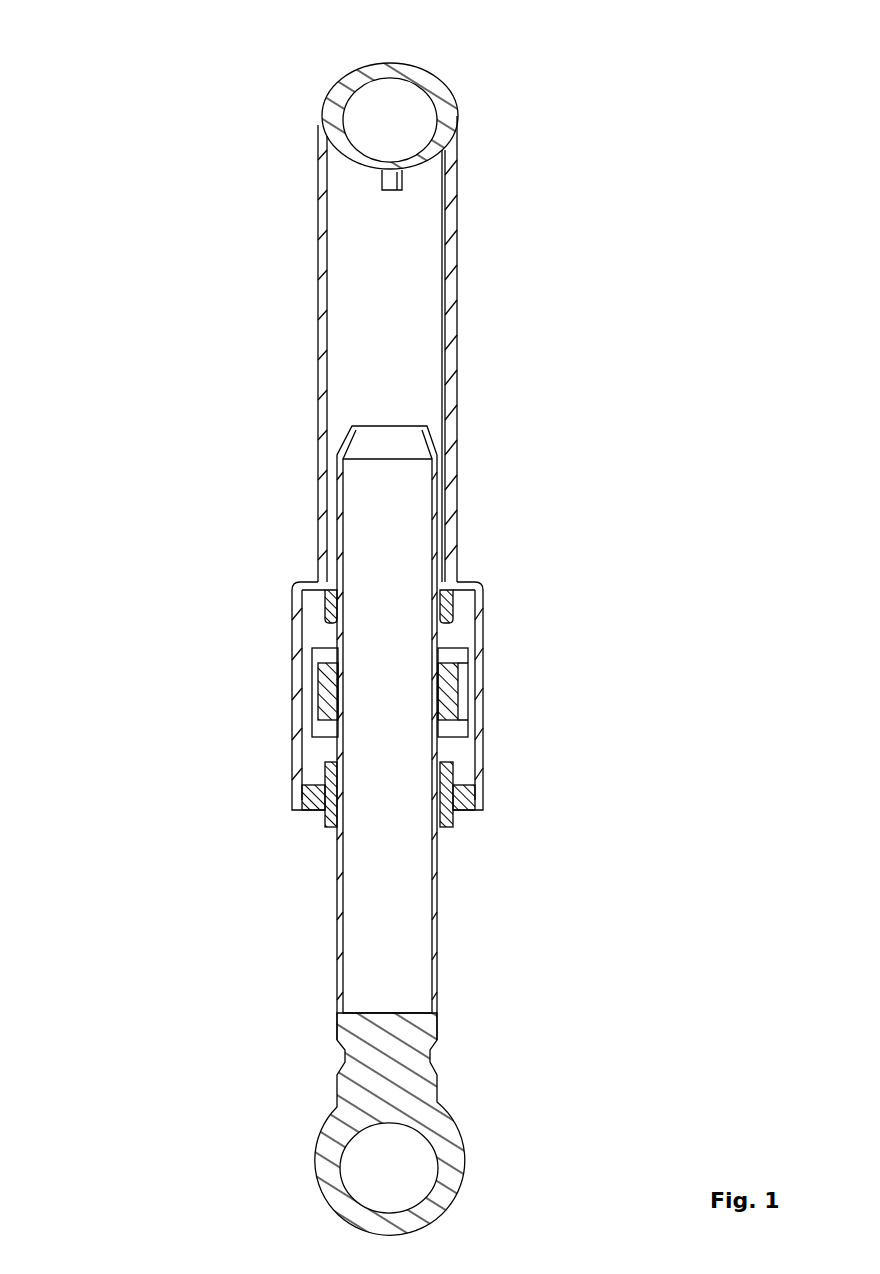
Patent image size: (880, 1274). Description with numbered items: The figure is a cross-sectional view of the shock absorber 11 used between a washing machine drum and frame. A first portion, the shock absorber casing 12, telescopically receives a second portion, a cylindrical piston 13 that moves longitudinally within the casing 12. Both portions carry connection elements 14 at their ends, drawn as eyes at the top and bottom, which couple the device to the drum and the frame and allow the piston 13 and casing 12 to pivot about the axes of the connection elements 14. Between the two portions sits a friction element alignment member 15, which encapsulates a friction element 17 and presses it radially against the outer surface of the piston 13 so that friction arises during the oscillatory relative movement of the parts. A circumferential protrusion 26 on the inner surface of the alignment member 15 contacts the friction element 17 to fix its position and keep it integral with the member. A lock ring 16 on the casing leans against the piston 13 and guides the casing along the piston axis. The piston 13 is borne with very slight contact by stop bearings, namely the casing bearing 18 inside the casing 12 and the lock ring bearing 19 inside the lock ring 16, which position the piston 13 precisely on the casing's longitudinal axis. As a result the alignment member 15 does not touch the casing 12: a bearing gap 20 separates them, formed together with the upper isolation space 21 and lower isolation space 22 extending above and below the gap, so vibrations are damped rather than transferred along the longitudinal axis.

The shock absorber 11 is at (232, 410).
The shock absorber casing 12 is at (327, 560).
The piston 13 is at (428, 436).
The connection elements 14 is at (327, 100).
The friction element alignment member 15 is at (320, 677).
The lock ring 16 is at (300, 798).
The friction element 17 is at (462, 705).
The casing bearing 18 is at (327, 602).
The lock ring bearing 19 is at (323, 768).
The bearing gap 20 is at (472, 658).
The upper isolation space 21 is at (467, 623).
The lower isolation space 22 is at (467, 763).
The circumferential protrusion 26 is at (455, 697).